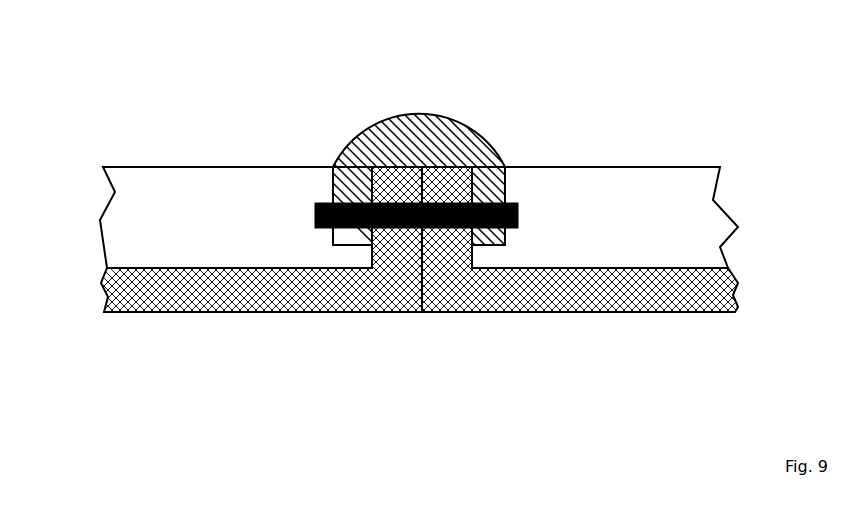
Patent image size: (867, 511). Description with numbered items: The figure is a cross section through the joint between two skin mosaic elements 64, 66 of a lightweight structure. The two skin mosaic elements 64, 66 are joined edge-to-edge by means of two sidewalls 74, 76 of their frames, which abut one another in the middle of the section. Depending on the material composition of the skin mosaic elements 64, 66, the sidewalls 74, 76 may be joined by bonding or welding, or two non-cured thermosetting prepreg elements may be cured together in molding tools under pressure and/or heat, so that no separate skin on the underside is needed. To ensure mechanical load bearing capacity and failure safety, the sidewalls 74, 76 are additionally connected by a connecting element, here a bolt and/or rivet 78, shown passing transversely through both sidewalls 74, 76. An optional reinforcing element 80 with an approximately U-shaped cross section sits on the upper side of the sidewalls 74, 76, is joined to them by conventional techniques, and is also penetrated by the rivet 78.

The skin mosaic element 64 is at (668, 193).
The skin mosaic element 66 is at (203, 192).
The sidewall 74 is at (362, 165).
The sidewall 76 is at (483, 168).
The rivet 78 is at (518, 224).
The reinforcing element 80 is at (432, 115).